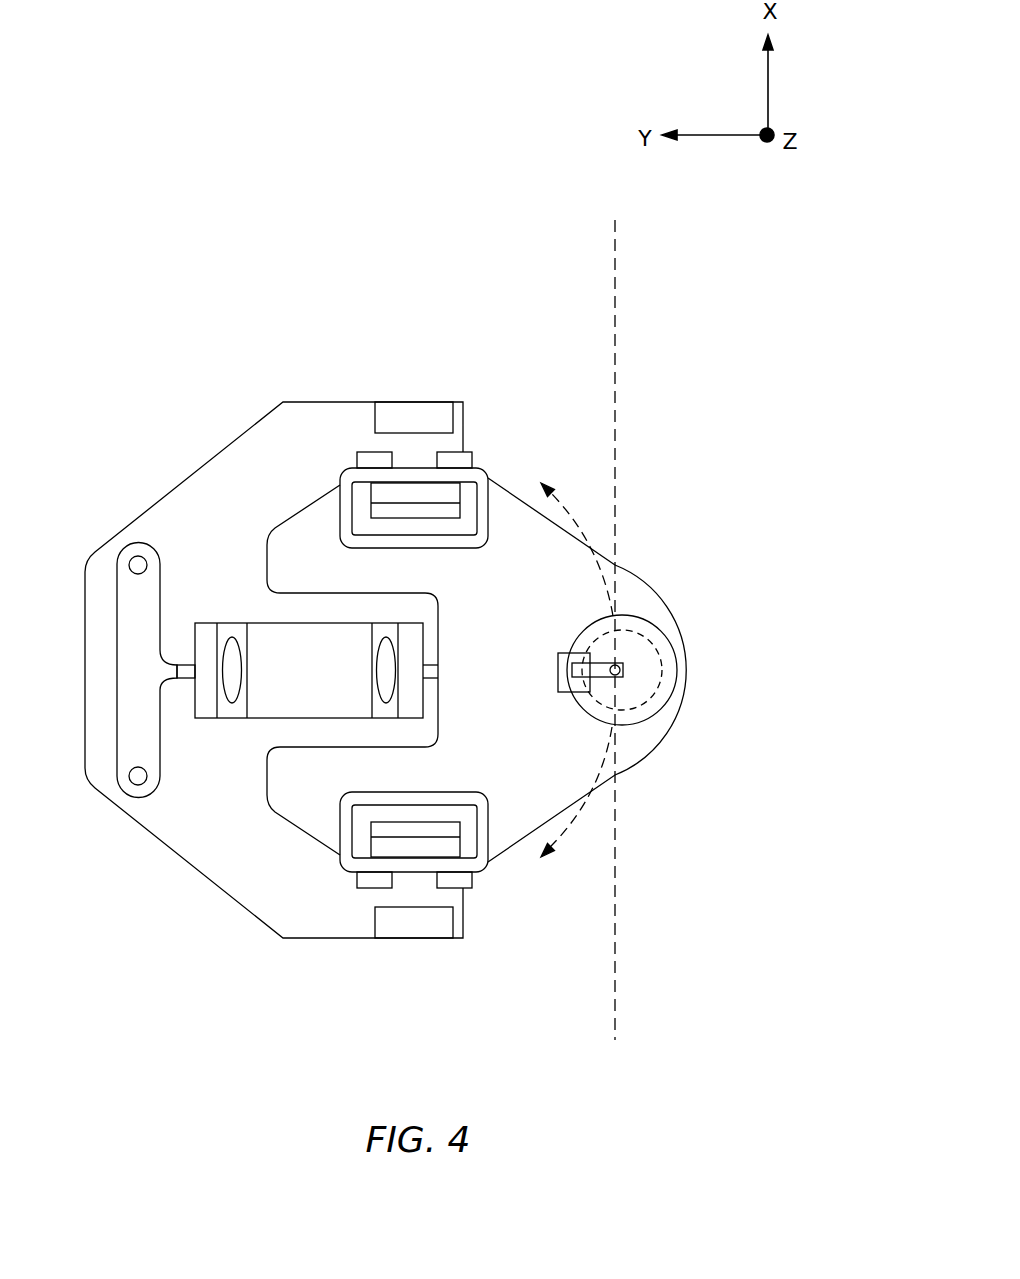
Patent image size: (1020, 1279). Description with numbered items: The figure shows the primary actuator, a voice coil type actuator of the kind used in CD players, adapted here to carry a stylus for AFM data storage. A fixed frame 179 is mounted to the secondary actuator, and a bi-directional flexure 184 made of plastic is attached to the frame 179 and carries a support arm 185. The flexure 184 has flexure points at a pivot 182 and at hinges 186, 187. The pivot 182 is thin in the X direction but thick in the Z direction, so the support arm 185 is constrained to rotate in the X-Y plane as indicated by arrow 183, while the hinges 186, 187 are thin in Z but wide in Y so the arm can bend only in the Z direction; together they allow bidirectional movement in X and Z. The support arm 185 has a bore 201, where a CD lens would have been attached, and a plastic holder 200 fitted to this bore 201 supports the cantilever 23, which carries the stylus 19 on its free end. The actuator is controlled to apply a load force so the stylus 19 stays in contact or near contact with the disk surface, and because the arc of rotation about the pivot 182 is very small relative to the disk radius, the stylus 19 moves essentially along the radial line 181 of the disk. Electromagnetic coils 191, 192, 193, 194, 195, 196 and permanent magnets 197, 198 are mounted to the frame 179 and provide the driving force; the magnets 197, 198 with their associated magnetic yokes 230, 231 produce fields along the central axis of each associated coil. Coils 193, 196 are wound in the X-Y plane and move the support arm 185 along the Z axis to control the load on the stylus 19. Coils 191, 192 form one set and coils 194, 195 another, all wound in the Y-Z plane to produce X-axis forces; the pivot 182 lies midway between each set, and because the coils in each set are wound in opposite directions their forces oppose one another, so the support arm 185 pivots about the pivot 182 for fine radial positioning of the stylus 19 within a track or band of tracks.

The stylus 19 is at (623, 669).
The cantilever 23 is at (617, 673).
The fixed frame 179 is at (237, 473).
The radial line 181 is at (620, 333).
The pivot 182 is at (433, 670).
The arrow 183 is at (570, 853).
The bi-directional flexure 184 is at (345, 645).
The support arm 185 is at (545, 547).
The hinge 186 is at (235, 622).
The hinge 187 is at (385, 718).
The electromagnetic coil 191 is at (353, 878).
The electromagnetic coil 192 is at (473, 882).
The electromagnetic coil 193 is at (350, 840).
The electromagnetic coil 194 is at (352, 470).
The electromagnetic coil 195 is at (478, 450).
The electromagnetic coil 196 is at (483, 512).
The permanent magnet 197 is at (403, 923).
The permanent magnet 198 is at (387, 412).
The holder 200 is at (652, 622).
The bore 201 is at (648, 700).
The magnetic yoke 230 is at (410, 828).
The magnetic yoke 231 is at (378, 510).